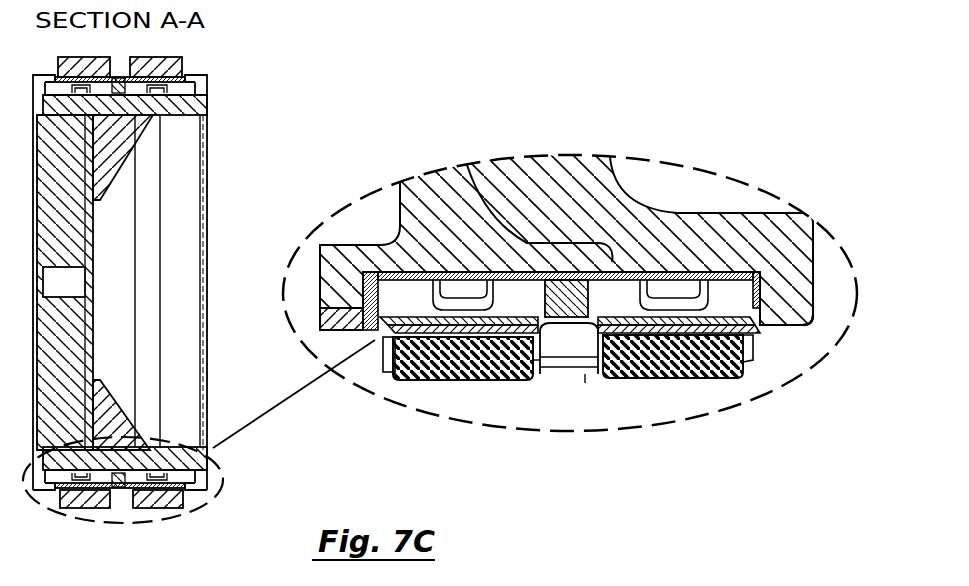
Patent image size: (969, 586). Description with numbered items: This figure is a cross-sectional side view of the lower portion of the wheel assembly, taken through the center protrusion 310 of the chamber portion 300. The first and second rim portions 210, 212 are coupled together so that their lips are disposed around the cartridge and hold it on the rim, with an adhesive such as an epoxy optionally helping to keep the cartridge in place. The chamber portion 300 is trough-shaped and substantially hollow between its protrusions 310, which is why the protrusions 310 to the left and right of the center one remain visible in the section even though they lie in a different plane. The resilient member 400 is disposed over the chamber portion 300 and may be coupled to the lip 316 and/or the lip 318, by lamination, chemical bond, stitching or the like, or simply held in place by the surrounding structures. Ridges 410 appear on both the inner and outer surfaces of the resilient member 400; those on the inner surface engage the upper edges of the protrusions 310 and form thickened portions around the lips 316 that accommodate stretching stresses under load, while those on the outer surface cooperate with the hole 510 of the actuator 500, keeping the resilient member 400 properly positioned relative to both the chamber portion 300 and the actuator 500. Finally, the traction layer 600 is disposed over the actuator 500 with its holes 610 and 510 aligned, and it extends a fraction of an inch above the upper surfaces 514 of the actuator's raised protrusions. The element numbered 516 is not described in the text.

The first rim portion 210 is at (430, 187).
The second rim portion 212 is at (540, 175).
The chamber portion 300 is at (322, 315).
The protrusion 310 is at (568, 290).
The lip 316 is at (757, 300).
The lip 318 is at (808, 335).
The resilient member 400 is at (761, 334).
The ridges 410 is at (380, 333).
The actuator 500 is at (757, 342).
The hole 510 is at (583, 388).
The upper surface 514 is at (537, 380).
The outer chamfer 516 is at (747, 360).
The traction layer 600 is at (680, 383).
The hole 610 is at (565, 387).